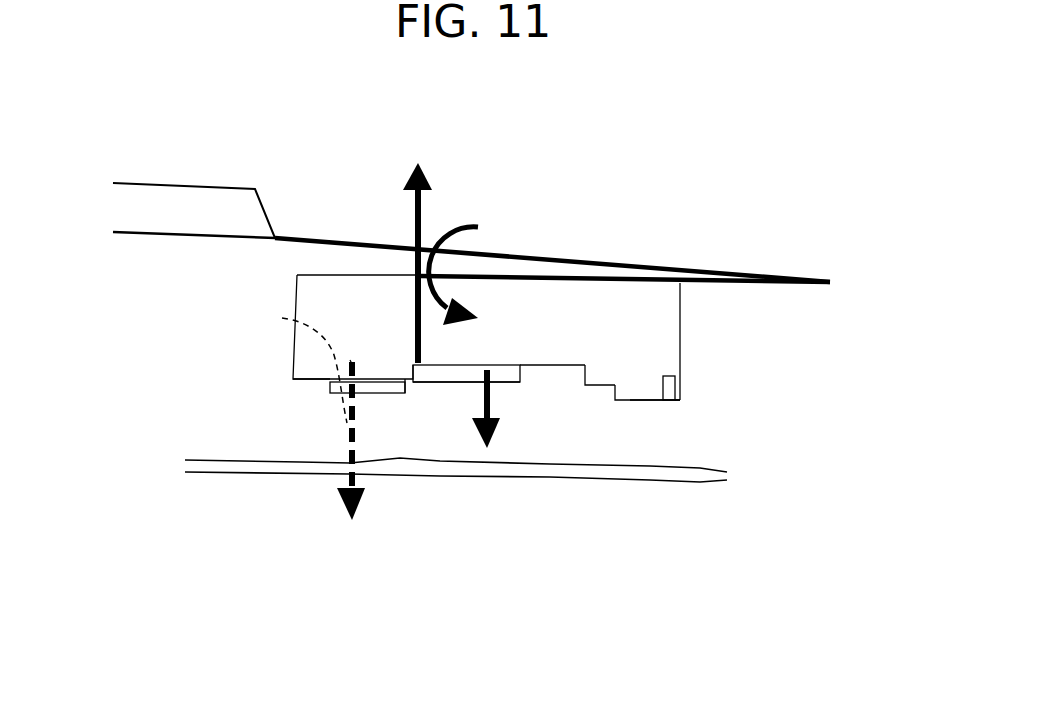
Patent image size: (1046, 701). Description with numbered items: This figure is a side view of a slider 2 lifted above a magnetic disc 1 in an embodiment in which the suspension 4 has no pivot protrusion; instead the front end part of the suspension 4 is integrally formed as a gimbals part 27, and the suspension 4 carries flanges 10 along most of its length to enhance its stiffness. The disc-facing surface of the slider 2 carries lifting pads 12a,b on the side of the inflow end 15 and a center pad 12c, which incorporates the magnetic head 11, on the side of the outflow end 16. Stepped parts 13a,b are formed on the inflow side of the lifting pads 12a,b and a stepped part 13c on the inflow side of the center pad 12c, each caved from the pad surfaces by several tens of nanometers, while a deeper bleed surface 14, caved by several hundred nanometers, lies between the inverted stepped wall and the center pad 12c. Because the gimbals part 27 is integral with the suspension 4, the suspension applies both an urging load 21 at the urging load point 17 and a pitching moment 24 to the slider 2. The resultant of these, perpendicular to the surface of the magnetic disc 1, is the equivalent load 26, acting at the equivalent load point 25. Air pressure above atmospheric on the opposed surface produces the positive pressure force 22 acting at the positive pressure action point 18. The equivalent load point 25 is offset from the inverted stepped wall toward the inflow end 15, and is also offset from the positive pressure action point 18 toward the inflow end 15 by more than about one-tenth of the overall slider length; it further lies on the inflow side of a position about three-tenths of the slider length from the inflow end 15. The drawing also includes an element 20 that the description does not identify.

The magnetic disc 1 is at (223, 490).
The slider 2 is at (450, 338).
The suspension 4 is at (186, 240).
The flanges 10 is at (178, 195).
The magnetic head 11 is at (670, 383).
The lifting pads 12a,b is at (388, 394).
The center pad 12c is at (645, 402).
The stepped parts 13a,b is at (313, 380).
The stepped part 13c is at (593, 387).
The bleed surface 14 is at (553, 368).
The inflow end 15 is at (293, 378).
The outflow end 16 is at (677, 402).
The urging load point 17 is at (488, 366).
The positive pressure action point 18 is at (415, 362).
The nozzle layer 20 is at (219, 463).
The urging load 21 is at (497, 447).
The positive pressure force 22 is at (427, 170).
The pitching moment 24 is at (458, 227).
The equivalent load point 25 is at (350, 360).
The equivalent load 26 is at (306, 411).
The gimbals part 27 is at (688, 268).